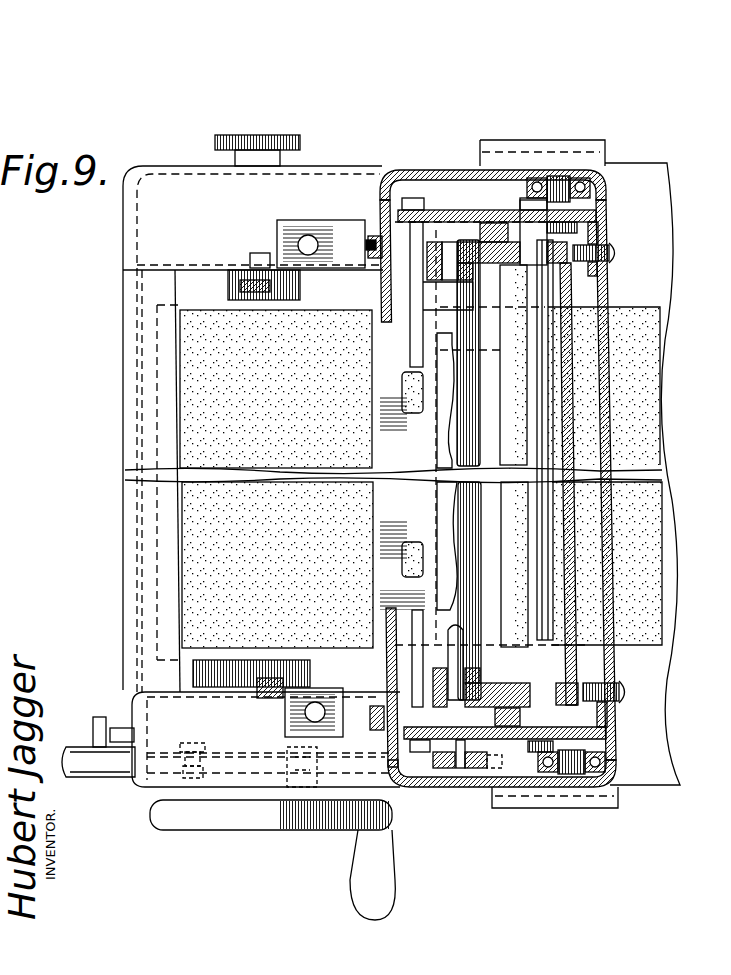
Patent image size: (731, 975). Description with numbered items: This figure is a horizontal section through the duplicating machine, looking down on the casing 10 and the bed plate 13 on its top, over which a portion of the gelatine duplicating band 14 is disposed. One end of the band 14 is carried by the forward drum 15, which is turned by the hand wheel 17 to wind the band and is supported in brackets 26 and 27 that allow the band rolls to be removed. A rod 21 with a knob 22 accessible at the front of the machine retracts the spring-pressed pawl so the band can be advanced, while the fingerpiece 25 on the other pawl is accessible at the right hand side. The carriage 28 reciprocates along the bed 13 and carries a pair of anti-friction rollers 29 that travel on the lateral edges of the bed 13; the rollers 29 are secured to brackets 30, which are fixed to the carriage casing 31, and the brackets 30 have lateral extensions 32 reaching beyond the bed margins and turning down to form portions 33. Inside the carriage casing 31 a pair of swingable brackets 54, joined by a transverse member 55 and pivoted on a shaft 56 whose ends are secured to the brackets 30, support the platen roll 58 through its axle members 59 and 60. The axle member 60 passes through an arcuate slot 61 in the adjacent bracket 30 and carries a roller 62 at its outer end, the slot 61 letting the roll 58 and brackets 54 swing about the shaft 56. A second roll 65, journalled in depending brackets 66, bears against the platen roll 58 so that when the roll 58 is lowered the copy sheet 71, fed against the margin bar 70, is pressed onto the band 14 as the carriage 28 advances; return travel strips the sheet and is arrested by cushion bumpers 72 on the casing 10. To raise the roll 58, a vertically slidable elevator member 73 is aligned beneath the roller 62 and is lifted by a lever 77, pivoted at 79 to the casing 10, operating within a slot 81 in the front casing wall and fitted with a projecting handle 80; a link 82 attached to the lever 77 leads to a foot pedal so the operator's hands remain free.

The casing 10 is at (120, 260).
The bed plate 13 is at (668, 203).
The duplicating band 14 is at (660, 611).
The spool or drum 15 is at (225, 640).
The hand wheel 17 is at (285, 827).
The rod 21 is at (122, 728).
The knob or fingerpiece 22 is at (98, 717).
The fingerpiece 25 is at (428, 768).
The bracket 26 is at (300, 286).
The bracket 27 is at (312, 668).
The carriage 28 is at (616, 600).
The anti-friction rollers 29 is at (608, 186).
The brackets 30 is at (598, 215).
The carriage casing 31 is at (610, 262).
The lateral extensions 32 is at (603, 175).
The downward portions 33 is at (480, 150).
The swingable brackets 54 is at (465, 242).
The transverse member 55 is at (574, 372).
The shaft 56 is at (544, 358).
The platen roll 58 is at (430, 335).
The axle member 59 is at (452, 252).
The axle member 60 is at (470, 692).
The arcuate slot 61 is at (459, 770).
The roller 62 is at (441, 770).
The second roll 65 is at (493, 560).
The depending brackets 66 is at (497, 222).
The margin bar 70 is at (410, 590).
The copy sheet 71 is at (480, 420).
The cushion bumpers 72 is at (373, 232).
The elevator member 73 is at (487, 770).
The lever 77 is at (228, 752).
The pivot 79 is at (288, 758).
The handle 80 is at (90, 770).
The slot 81 is at (145, 752).
The link 82 is at (180, 772).